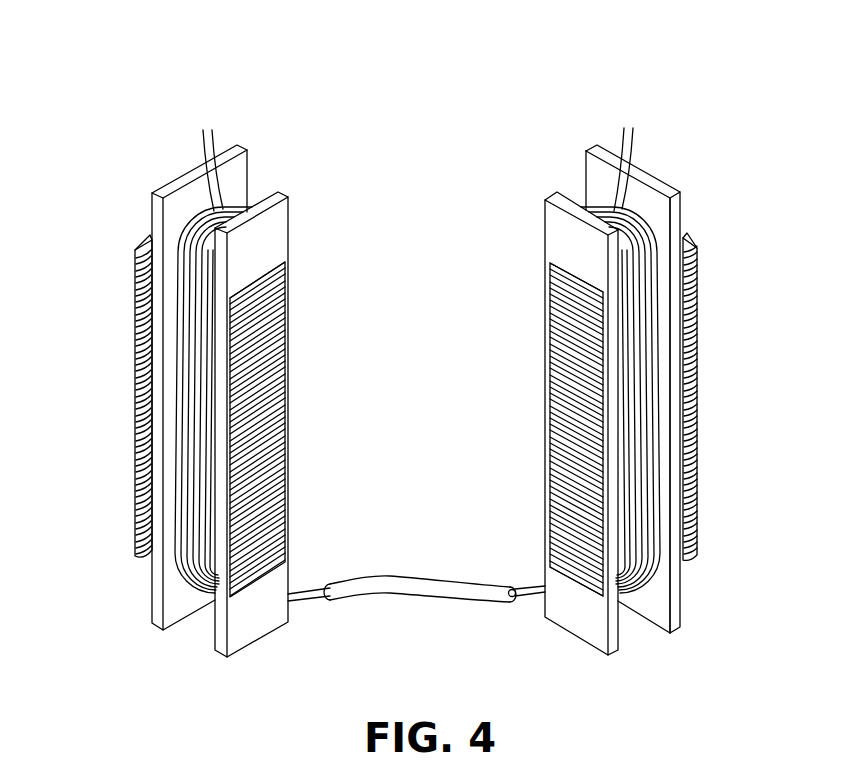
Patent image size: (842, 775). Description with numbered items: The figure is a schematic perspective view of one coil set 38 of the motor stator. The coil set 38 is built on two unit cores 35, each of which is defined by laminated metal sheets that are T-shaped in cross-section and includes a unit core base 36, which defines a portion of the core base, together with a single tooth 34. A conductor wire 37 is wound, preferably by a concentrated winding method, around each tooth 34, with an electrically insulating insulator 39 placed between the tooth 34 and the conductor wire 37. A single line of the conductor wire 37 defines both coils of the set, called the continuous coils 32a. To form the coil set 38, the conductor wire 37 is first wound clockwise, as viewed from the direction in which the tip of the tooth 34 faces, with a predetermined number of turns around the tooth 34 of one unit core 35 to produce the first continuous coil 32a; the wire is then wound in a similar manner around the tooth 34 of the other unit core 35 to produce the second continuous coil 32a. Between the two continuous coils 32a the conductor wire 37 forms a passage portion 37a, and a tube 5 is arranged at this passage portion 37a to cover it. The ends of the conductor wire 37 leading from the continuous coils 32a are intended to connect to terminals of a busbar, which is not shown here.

The coil set 38 is at (432, 92).
The insulator 39 is at (660, 188).
The conductor wire 37 is at (203, 151).
The unit core base 36 is at (698, 287).
The unit core 35 is at (127, 595).
The tooth 34 is at (274, 452).
The continuous coil 32a is at (183, 468).
The passage portion 37a is at (525, 587).
The tube 5 is at (428, 592).